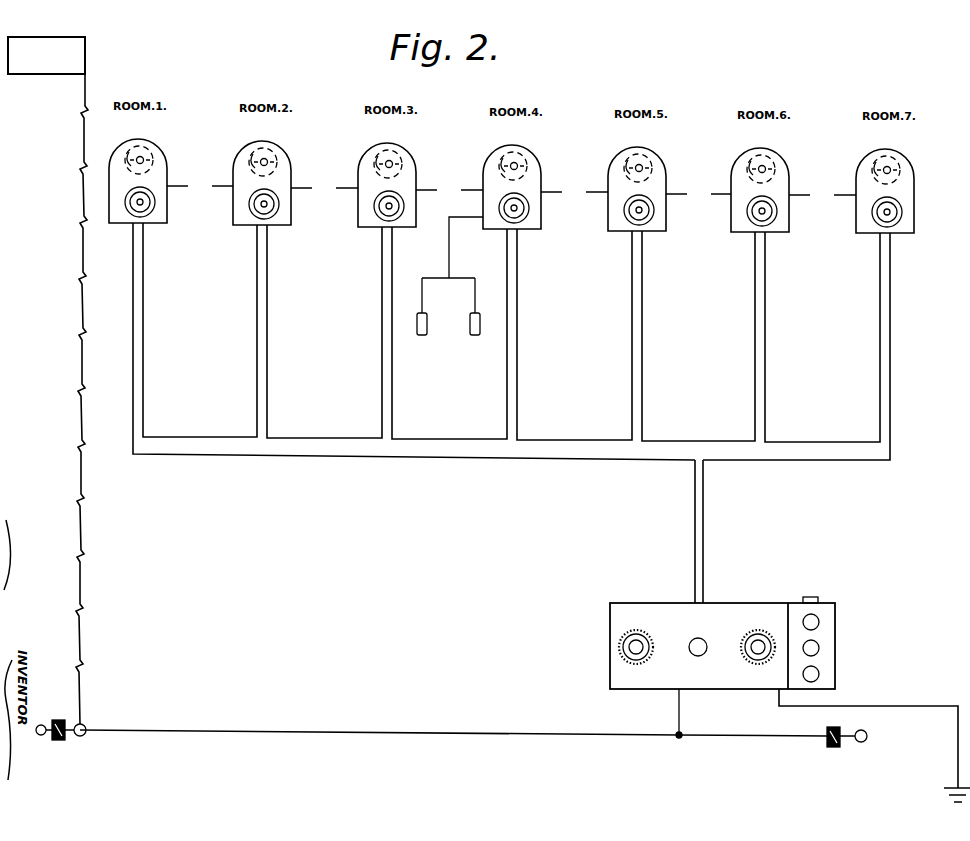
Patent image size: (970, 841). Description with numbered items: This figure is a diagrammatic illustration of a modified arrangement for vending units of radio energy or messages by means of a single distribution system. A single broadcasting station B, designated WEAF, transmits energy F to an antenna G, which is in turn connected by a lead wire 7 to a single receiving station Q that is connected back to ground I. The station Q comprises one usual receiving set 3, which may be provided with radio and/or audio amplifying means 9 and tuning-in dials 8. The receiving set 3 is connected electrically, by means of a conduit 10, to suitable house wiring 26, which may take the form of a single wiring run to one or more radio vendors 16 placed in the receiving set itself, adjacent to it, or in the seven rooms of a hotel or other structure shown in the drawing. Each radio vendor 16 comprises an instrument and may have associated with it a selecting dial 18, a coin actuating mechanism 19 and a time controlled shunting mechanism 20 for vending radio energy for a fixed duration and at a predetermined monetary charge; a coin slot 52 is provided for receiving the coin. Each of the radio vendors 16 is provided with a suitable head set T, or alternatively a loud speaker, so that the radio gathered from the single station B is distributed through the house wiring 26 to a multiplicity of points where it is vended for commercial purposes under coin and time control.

The broadcasting station B is at (86, 62).
The energy F is at (80, 440).
The radio vendor 16 is at (109, 223).
The selecting dial 18 is at (150, 211).
The coin actuating mechanism 19 is at (146, 157).
The time controlled shunting mechanism 20 is at (133, 151).
The coin slot 52 is at (250, 153).
The house wiring 26 is at (303, 443).
The head set T is at (450, 288).
The conduit 10 is at (695, 497).
The receiving station Q is at (736, 621).
The receiving set 3 is at (640, 612).
The tuning-in dial 8 is at (625, 656).
The amplifying means 9 is at (828, 628).
The lead wire 7 is at (676, 705).
The antenna G is at (370, 733).
The ground I is at (953, 786).